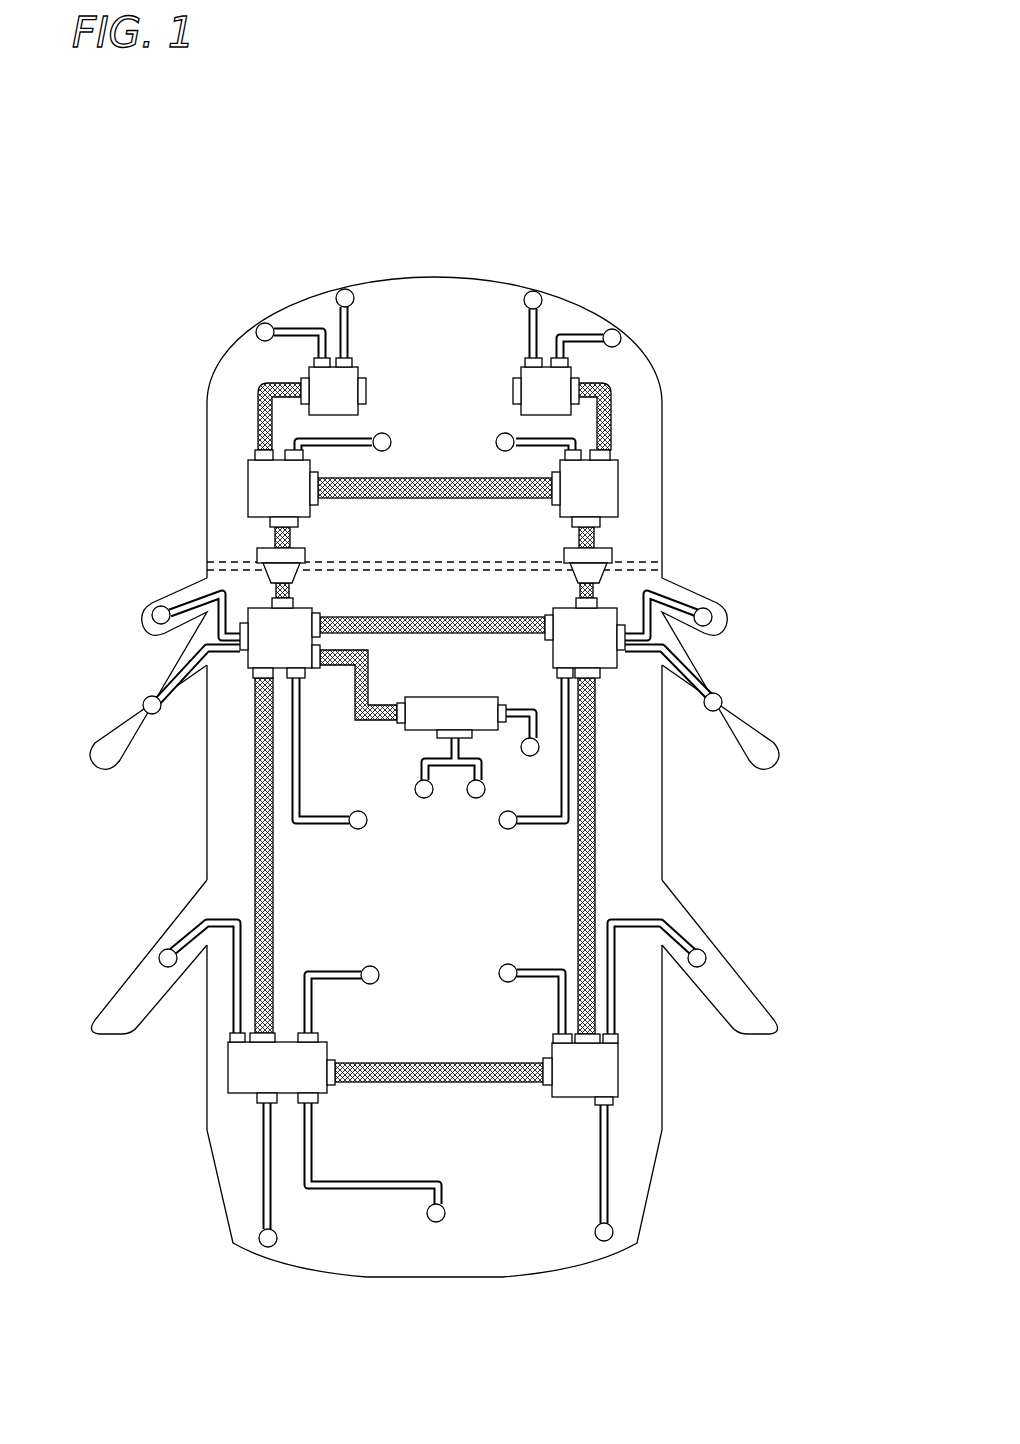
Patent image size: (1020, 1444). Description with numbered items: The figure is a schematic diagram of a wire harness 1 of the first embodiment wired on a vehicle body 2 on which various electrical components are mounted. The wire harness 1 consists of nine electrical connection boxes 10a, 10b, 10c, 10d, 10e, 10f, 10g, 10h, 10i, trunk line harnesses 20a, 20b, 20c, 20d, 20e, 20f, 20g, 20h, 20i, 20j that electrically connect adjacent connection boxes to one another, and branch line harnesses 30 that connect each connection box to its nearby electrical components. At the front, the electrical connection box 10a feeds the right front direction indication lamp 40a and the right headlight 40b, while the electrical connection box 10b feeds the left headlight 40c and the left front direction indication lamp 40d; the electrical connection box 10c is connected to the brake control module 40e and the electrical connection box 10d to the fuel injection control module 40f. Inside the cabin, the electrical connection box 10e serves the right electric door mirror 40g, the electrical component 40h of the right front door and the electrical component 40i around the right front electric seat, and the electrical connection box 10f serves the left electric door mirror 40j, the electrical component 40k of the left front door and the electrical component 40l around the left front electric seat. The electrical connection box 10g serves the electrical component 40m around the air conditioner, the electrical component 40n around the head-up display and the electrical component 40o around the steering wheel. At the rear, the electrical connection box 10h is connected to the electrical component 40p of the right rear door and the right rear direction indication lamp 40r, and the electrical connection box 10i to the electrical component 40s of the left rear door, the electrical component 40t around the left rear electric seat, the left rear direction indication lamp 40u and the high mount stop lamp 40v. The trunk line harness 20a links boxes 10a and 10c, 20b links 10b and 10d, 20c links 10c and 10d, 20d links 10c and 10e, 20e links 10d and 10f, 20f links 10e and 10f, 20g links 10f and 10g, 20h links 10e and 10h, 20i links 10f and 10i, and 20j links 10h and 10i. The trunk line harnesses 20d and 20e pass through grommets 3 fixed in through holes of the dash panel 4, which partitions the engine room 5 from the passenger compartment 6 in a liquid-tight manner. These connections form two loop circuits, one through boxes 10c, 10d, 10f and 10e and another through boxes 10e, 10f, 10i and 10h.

The wire harness 1 is at (422, 723).
The vehicle body 2 is at (446, 266).
The grommet 3 is at (256, 550).
The dash panel 4 is at (235, 560).
The engine room 5 is at (645, 503).
The passenger compartment 6 is at (645, 848).
The electrical connection box 10a is at (572, 372).
The electrical connection box 10b is at (308, 372).
The electrical connection box 10c is at (619, 470).
The electrical connection box 10d is at (247, 478).
The electrical connection box 10e is at (612, 608).
The electrical connection box 10f is at (245, 608).
The electrical connection box 10g is at (455, 697).
The electrical connection box 10h is at (619, 1072).
The electrical connection box 10i is at (227, 1075).
The trunk line harness 20a is at (607, 410).
The trunk line harness 20b is at (260, 395).
The trunk line harness 20c is at (414, 499).
The trunk line harness 20d is at (578, 540).
The trunk line harness 20e is at (291, 540).
The trunk line harness 20f is at (430, 616).
The trunk line harness 20g is at (366, 723).
The trunk line harness 20h is at (596, 790).
The trunk line harness 20i is at (255, 803).
The trunk line harness 20j is at (448, 1085).
The branch line harness 30 is at (318, 330).
The direction indication lamp 40a is at (533, 291).
The right headlight 40b is at (616, 329).
The left headlight 40c is at (346, 289).
The direction indication lamp 40d is at (256, 331).
The brake control module 40e is at (496, 440).
The fuel injection control module 40f is at (392, 445).
The right electric door mirror 40g is at (712, 615).
The electrical component of right front door 40h is at (722, 700).
The electrical component around right front electric seat 40i is at (506, 832).
The left electric door mirror 40j is at (152, 615).
The electrical component of left front door 40k is at (143, 703).
The electrical component around left front electric seat 40l is at (358, 832).
The electrical component around air conditioner 40m is at (419, 798).
The electrical component around head-up display 40n is at (473, 798).
The electrical component around steering wheel 40o is at (528, 758).
The electrical component of right rear door 40p is at (708, 958).
The direction indication lamp 40r is at (613, 1232).
The electrical component of left rear door 40s is at (158, 958).
The electrical component around left rear electric seat 40t is at (370, 985).
The direction indication lamp 40u is at (269, 1248).
The high mount stop lamp 40v is at (436, 1223).